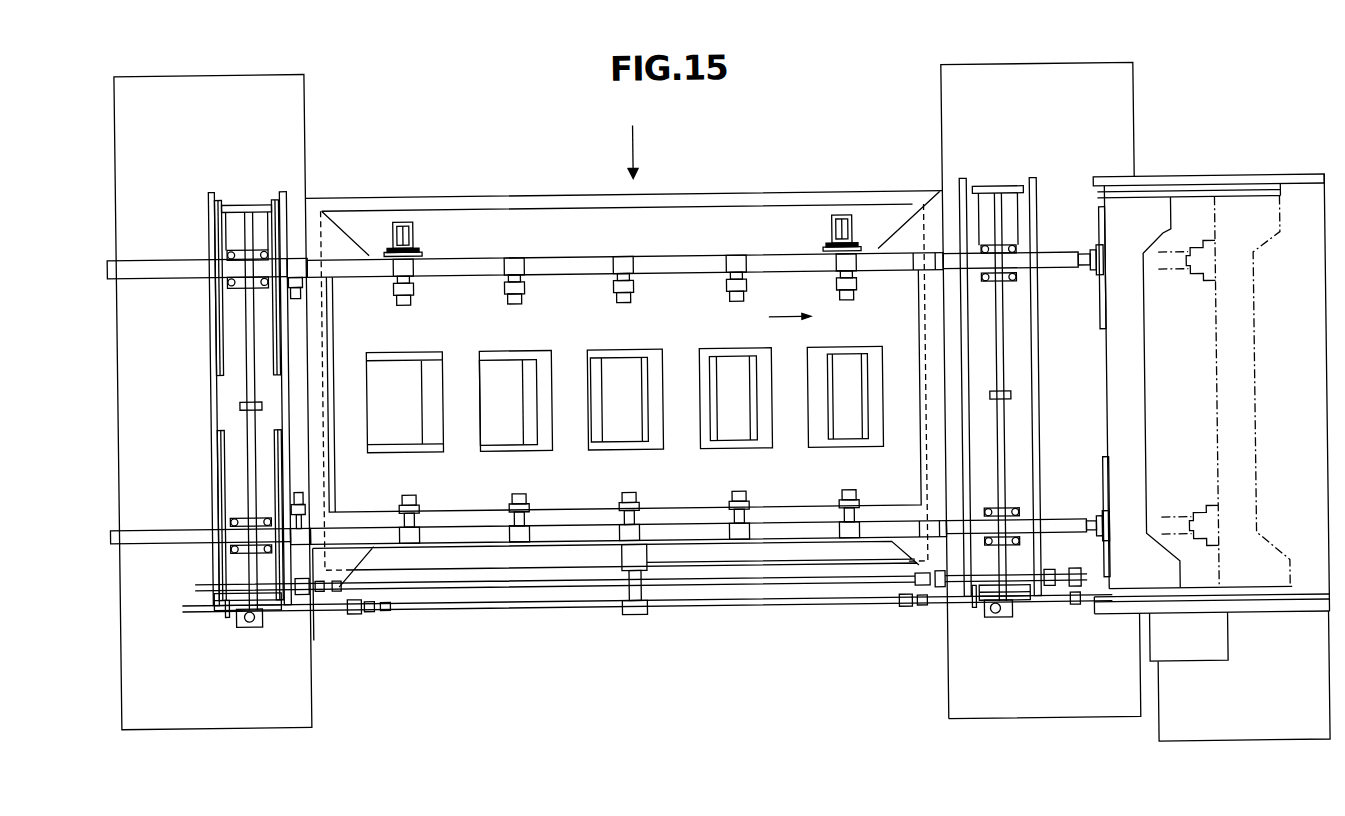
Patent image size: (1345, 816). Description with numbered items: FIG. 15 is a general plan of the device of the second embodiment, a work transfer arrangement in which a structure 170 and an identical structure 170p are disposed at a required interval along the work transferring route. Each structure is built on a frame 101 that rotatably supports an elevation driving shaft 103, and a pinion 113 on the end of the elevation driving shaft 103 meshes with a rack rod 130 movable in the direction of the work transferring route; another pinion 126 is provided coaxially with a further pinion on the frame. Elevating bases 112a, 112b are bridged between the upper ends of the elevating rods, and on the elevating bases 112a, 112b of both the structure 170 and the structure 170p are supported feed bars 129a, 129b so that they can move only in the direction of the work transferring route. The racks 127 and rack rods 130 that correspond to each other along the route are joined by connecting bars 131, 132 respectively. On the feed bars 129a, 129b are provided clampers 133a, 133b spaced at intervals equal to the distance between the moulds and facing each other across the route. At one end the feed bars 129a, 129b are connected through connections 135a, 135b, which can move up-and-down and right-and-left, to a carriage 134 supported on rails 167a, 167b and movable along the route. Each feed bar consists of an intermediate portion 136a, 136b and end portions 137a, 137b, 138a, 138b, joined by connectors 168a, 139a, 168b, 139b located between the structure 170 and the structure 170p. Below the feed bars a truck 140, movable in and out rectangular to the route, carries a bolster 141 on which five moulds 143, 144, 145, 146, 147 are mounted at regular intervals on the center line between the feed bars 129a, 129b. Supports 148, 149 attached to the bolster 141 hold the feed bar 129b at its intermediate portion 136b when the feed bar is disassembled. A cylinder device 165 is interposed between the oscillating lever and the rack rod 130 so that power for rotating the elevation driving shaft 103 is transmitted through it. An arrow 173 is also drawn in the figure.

The frame 101 is at (211, 327).
The elevation driving shaft 103 is at (247, 389).
The elevating base 112a is at (246, 520).
The elevating base 112b is at (246, 245).
The pinion 113 is at (257, 606).
The pinion 126 is at (248, 622).
The rack 127 is at (232, 612).
The feed bar 129a is at (483, 541).
The feed bar 129b is at (470, 256).
The rack rod 130 is at (225, 610).
The connecting bar 131 is at (680, 608).
The connecting bar 132 is at (678, 570).
The clamper 133a is at (298, 488).
The clamper 133b is at (299, 296).
The carriage 134 is at (1140, 372).
The connection 135a is at (1096, 516).
The connection 135b is at (1098, 302).
The intermediate portion 136a is at (560, 541).
The intermediate portion 136b is at (568, 256).
The end portion 137a is at (143, 538).
The end portion 137b is at (160, 262).
The end portion 138a is at (1068, 536).
The end portion 138b is at (1052, 258).
The connector 139a is at (930, 524).
The connector 139b is at (925, 273).
The truck 140 is at (705, 200).
The bolster 141 is at (748, 226).
The mould 143 is at (404, 402).
The mould 144 is at (515, 400).
The mould 145 is at (625, 399).
The mould 146 is at (735, 398).
The mould 147 is at (845, 396).
The support 148 is at (412, 225).
The support 149 is at (850, 226).
The cylinder device 165 is at (1080, 586).
The rail 167a is at (1262, 594).
The rail 167b is at (1200, 203).
The connector 168a is at (335, 525).
The connector 168b is at (331, 280).
The structure 170 is at (210, 412).
The structure 170p is at (1048, 443).
The direction arrow 173 is at (638, 160).